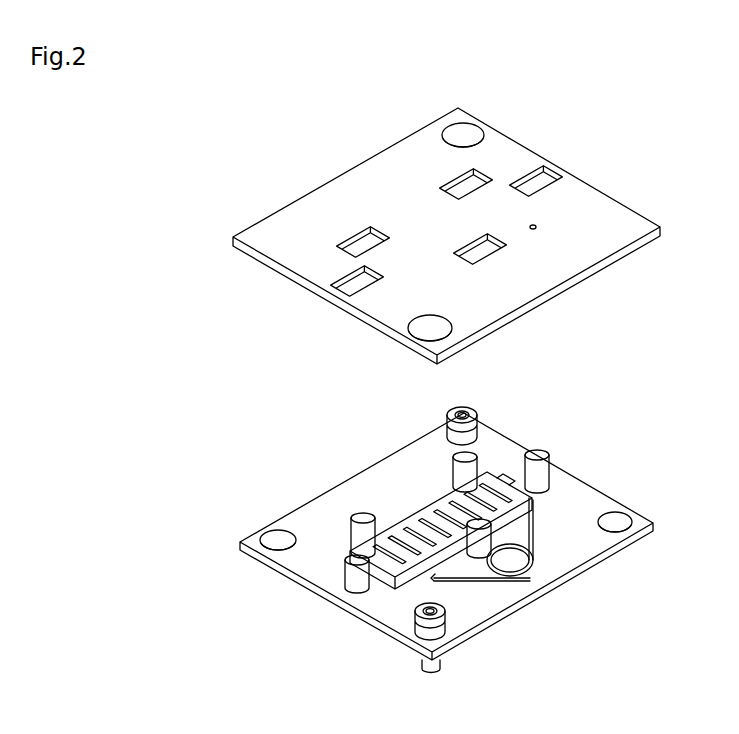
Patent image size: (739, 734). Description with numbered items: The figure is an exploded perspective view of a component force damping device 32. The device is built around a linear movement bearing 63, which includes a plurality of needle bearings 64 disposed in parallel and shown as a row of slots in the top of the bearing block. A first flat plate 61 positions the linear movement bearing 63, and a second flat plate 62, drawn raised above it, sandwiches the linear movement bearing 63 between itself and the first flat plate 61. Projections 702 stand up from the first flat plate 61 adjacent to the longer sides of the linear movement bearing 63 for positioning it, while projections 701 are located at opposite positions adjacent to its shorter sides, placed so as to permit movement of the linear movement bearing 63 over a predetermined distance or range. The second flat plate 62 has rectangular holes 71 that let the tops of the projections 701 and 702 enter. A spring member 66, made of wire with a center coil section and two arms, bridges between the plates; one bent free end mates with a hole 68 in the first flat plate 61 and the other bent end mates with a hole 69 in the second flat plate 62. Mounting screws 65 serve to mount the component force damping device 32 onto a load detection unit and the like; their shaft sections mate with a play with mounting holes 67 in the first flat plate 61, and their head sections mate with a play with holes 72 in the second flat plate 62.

The component force damping device 32 is at (148, 345).
The first flat plate 61 is at (622, 555).
The second flat plate 62 is at (590, 282).
The linear movement bearing 63 is at (407, 512).
The needle bearings 64 is at (427, 515).
The mounting screws 65 is at (472, 406).
The spring member 66 is at (537, 538).
The mounting holes 67 is at (278, 528).
The hole 68 is at (425, 587).
The hole 69 is at (537, 224).
The rectangular holes 71 is at (528, 172).
The holes 72 is at (450, 130).
The projections 701 is at (288, 615).
The projections 702 is at (468, 455).